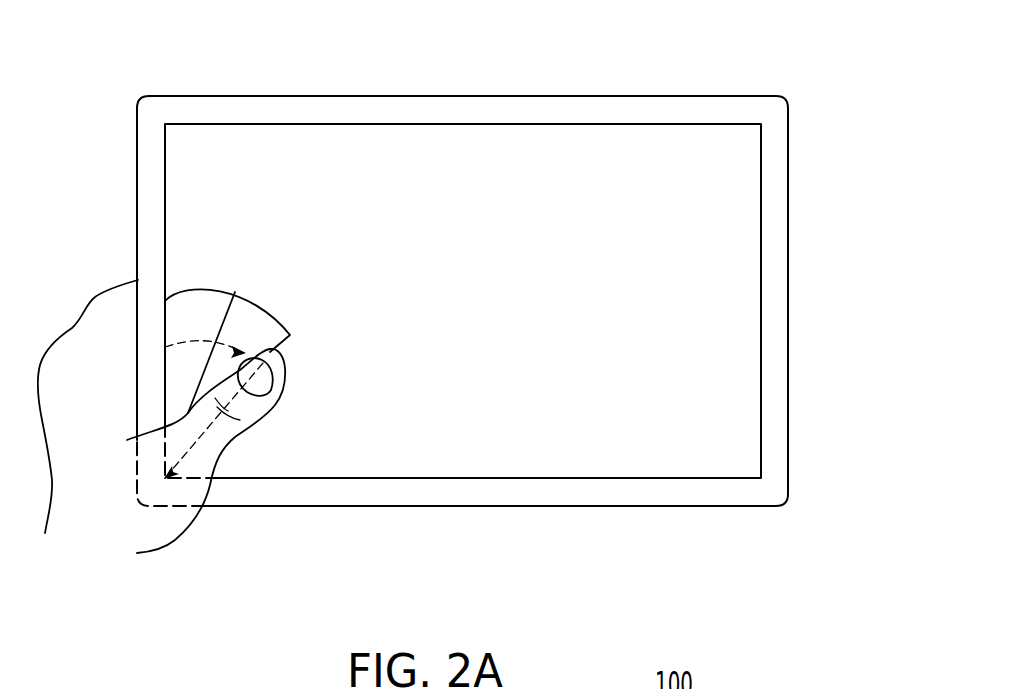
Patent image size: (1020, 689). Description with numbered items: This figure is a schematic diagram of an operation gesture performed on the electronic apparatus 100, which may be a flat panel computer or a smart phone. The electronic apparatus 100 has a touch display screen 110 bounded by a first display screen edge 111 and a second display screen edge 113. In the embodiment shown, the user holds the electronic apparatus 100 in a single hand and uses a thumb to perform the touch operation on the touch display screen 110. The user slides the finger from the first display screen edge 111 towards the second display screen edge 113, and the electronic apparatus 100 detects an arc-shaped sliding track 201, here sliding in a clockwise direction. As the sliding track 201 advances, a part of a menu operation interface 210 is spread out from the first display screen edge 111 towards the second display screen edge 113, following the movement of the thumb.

The electronic apparatus 100 is at (662, 97).
The touch display screen 110 is at (588, 143).
The first display screen edge 111 is at (165, 197).
The second display screen edge 113 is at (418, 478).
The sliding track 201 is at (165, 478).
The menu operation interface 210 is at (270, 308).